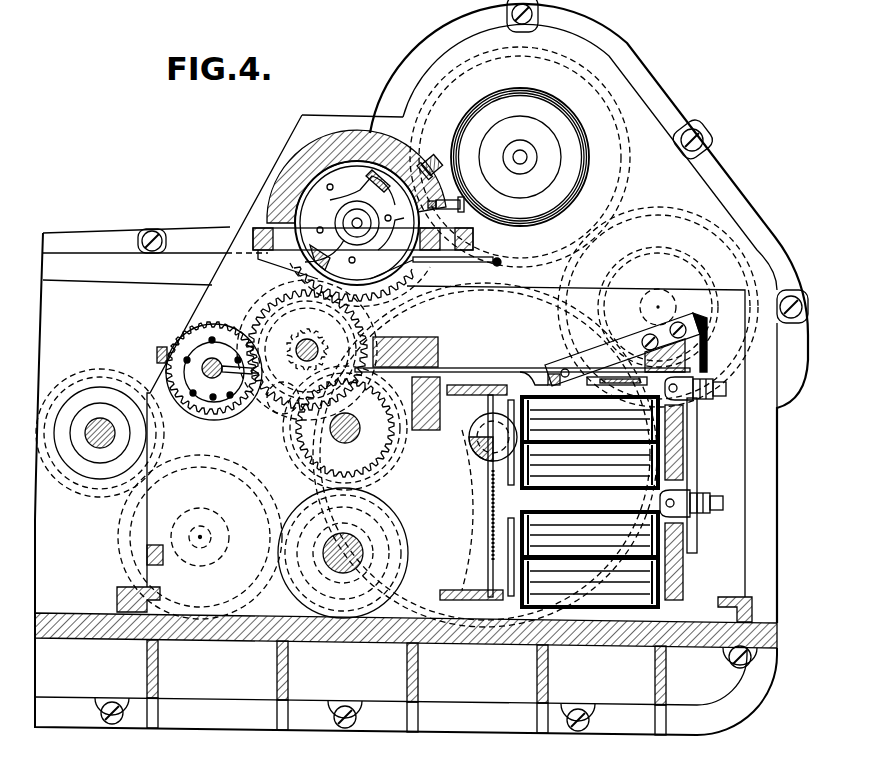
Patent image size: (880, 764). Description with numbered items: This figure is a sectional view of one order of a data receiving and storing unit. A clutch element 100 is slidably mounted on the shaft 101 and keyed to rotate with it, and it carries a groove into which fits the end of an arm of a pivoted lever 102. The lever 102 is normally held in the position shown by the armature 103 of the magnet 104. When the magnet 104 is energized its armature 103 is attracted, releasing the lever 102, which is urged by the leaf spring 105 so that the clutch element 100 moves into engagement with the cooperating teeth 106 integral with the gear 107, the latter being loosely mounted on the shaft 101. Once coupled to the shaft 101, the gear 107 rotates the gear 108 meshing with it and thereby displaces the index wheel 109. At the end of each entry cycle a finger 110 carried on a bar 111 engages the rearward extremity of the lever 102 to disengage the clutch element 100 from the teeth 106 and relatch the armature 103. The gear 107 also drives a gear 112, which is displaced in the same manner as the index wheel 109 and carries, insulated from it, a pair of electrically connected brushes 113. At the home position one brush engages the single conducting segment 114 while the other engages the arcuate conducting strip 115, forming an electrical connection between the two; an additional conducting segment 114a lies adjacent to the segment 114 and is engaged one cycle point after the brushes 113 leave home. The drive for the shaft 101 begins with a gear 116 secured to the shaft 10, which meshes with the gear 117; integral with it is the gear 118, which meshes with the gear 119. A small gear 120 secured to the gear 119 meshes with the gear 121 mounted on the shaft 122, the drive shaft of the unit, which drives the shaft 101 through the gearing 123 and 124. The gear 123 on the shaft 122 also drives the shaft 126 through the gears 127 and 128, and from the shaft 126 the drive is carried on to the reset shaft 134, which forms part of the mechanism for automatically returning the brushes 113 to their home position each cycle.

The shaft 10 is at (523, 158).
The clutch element 100 is at (292, 320).
The shaft 101 is at (277, 393).
The lever 102 is at (460, 368).
The armature 103 is at (517, 487).
The magnet 104 is at (590, 502).
The leaf spring 105 is at (595, 355).
The cooperating teeth 106 is at (370, 322).
The gear 107 is at (294, 289).
The gear 108 is at (225, 333).
The index wheel 109 is at (200, 410).
The finger 110 is at (605, 398).
The bar 111 is at (642, 375).
The gear 112 is at (397, 300).
The brushes 113 is at (342, 262).
The conducting segment 114 is at (462, 203).
The additional conducting segment 114a is at (437, 140).
The arcuate conducting strip 115 is at (407, 263).
The gear 116 is at (618, 118).
The gear 117 is at (710, 230).
The gear 118 is at (630, 258).
The gear 119 is at (537, 277).
The small gear 120 is at (472, 510).
The gear 121 is at (428, 657).
The drive shaft 122 is at (350, 560).
The gearing 123 is at (390, 498).
The gearing 124 is at (290, 432).
The shaft 126 is at (97, 447).
The gear 127 is at (108, 558).
The gear 128 is at (118, 370).
The reset shaft 134 is at (205, 358).